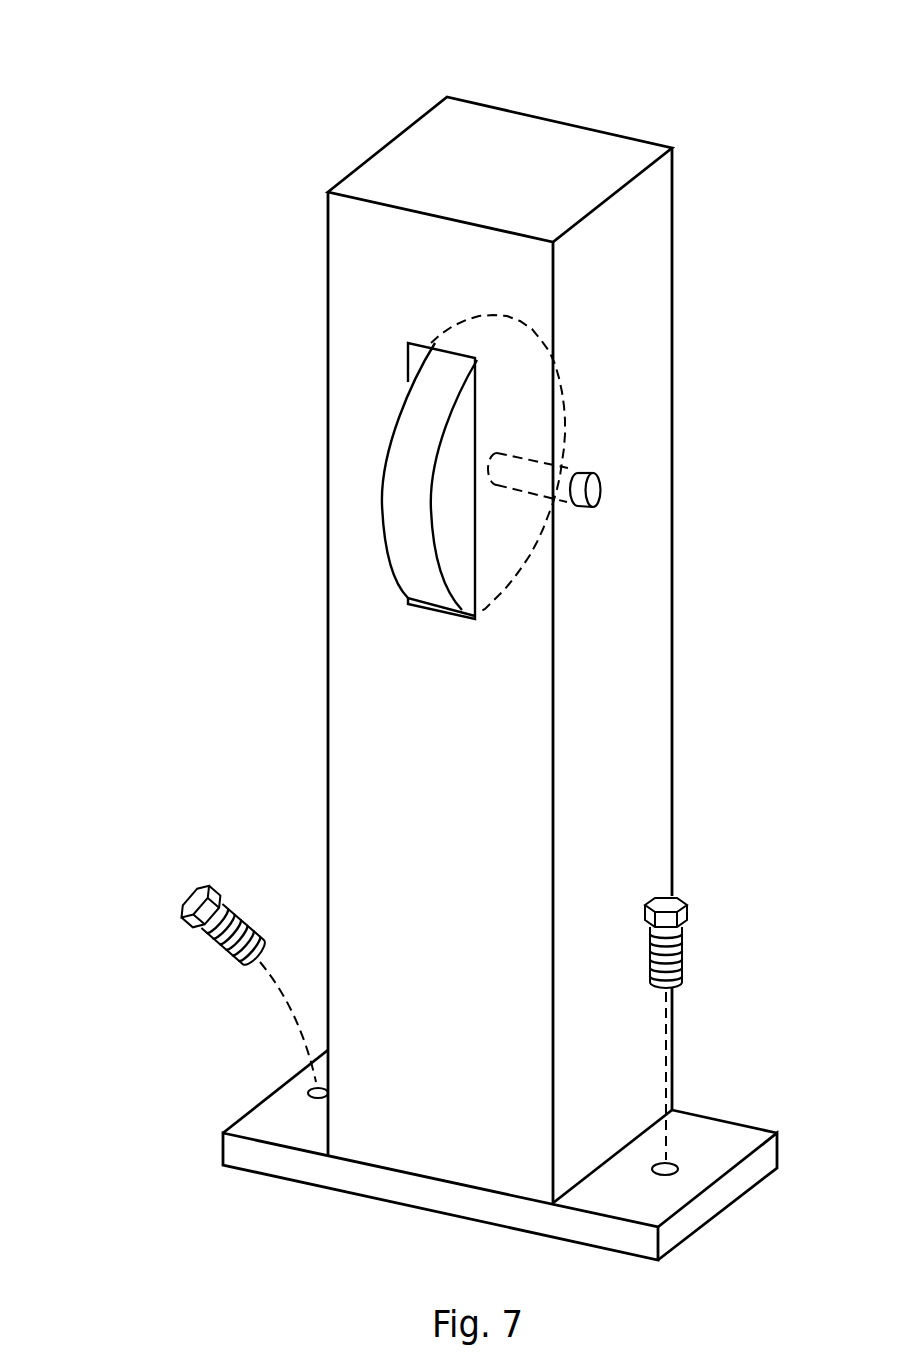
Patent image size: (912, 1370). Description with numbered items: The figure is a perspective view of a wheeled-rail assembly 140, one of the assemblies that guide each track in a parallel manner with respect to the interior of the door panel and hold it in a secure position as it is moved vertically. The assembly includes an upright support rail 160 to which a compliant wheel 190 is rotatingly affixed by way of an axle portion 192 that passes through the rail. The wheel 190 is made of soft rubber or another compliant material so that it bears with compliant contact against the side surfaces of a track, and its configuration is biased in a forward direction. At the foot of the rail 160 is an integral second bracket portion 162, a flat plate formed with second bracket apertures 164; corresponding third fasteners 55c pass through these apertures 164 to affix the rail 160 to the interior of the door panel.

The wheeled-rail assembly 140 is at (133, 158).
The support rail 160 is at (627, 280).
The compliant wheel 190 is at (397, 518).
The axle portion 192 is at (593, 490).
The second bracket portion 162 is at (265, 1120).
The second bracket aperture 164 is at (312, 1100).
The third fastener 55c is at (682, 942).